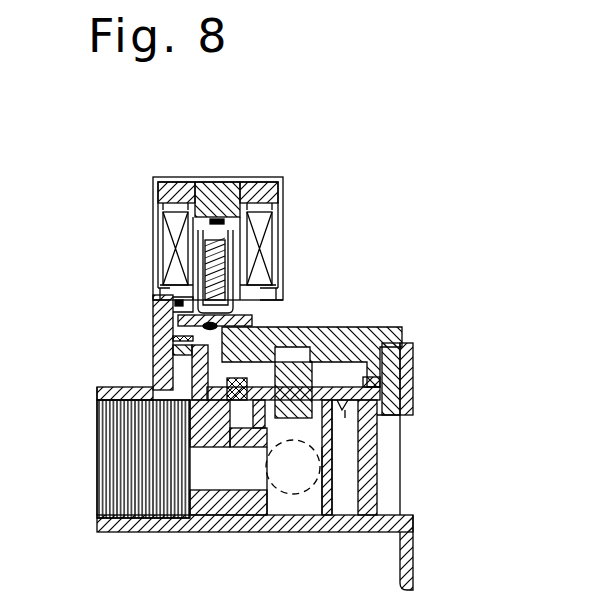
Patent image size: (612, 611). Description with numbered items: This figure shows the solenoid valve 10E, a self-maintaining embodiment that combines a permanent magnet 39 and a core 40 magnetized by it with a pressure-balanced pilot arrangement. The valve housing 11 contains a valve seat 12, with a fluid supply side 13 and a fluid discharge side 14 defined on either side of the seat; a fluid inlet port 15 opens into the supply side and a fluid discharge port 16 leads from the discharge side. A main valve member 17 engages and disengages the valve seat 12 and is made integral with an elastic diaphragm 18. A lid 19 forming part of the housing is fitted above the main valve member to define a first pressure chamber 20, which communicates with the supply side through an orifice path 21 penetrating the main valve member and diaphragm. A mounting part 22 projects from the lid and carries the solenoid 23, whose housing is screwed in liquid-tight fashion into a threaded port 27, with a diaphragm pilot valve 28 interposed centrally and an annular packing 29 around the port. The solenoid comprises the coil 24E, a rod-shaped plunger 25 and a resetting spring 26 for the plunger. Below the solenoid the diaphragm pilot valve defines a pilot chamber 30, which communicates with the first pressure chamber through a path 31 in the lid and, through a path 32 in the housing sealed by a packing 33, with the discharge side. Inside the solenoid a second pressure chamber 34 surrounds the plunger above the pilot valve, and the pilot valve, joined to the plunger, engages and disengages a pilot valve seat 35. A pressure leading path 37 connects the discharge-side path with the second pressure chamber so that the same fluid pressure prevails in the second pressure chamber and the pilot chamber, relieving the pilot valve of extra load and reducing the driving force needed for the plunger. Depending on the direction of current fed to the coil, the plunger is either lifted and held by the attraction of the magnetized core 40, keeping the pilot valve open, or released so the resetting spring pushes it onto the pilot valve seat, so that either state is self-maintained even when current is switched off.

The solenoid valve 10E is at (422, 352).
The valve housing 11 is at (216, 518).
The valve seat 12 is at (345, 412).
The fluid supply side 13 is at (344, 497).
The fluid discharge side 14 is at (233, 492).
The fluid inlet port 15 is at (293, 468).
The fluid discharge port 16 is at (95, 483).
The main valve member 17 is at (336, 425).
The elastic diaphragm 18 is at (366, 402).
The lid 19 is at (342, 326).
The first pressure chamber 20 is at (377, 335).
The orifice path 21 is at (257, 490).
The mounting part 22 is at (173, 330).
The solenoid 23 is at (280, 182).
The coil 24E is at (272, 232).
The plunger 25 is at (281, 190).
The resetting spring 26 is at (222, 243).
The threaded port 27 is at (281, 283).
The diaphragm pilot valve 28 is at (193, 295).
The annular packing 29 is at (155, 298).
The pilot chamber 30 is at (279, 312).
The path 31 is at (195, 395).
The path 32 is at (192, 410).
The packing 33 is at (190, 365).
The second pressure chamber 34 is at (198, 232).
The pilot valve seat 35 is at (178, 352).
The pressure leading path 37 is at (170, 339).
The permanent magnet 39 is at (172, 190).
The core 40 is at (214, 219).